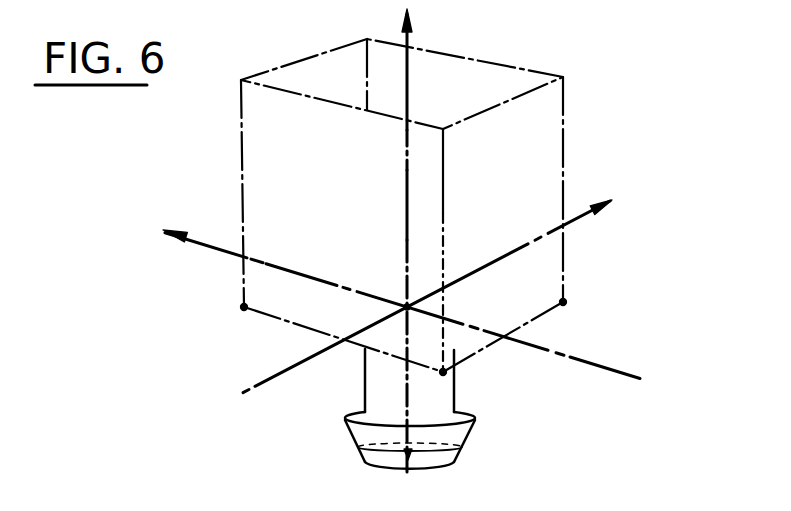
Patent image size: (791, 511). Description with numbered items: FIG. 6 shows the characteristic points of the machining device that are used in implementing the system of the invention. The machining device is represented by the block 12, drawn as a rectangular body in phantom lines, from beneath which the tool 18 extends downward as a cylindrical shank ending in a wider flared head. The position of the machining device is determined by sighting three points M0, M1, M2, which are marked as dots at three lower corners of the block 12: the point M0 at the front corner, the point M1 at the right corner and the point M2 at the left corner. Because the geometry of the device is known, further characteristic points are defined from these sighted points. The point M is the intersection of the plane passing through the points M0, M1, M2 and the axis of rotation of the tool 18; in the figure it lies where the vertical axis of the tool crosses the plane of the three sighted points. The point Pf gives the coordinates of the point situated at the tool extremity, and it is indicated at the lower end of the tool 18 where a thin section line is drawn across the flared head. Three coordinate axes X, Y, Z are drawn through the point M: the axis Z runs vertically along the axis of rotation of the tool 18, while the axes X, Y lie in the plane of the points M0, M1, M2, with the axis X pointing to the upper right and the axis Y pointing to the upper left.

The workpiece block (machining envelope) 12 is at (569, 149).
The tool 18 is at (370, 400).
The characteristic point M is at (406, 306).
The sighted point M0 is at (443, 372).
The sighted point M1 is at (563, 302).
The sighted point M2 is at (244, 307).
The tool extremity point Pf is at (421, 444).
The X axis X is at (427, 283).
The Y axis Y is at (400, 288).
The Z axis Z is at (418, 240).